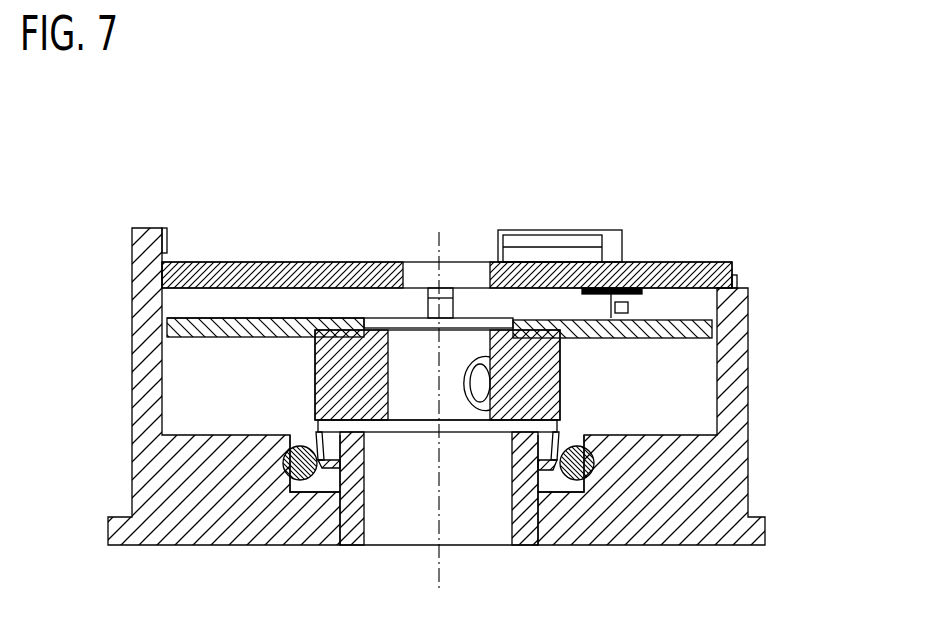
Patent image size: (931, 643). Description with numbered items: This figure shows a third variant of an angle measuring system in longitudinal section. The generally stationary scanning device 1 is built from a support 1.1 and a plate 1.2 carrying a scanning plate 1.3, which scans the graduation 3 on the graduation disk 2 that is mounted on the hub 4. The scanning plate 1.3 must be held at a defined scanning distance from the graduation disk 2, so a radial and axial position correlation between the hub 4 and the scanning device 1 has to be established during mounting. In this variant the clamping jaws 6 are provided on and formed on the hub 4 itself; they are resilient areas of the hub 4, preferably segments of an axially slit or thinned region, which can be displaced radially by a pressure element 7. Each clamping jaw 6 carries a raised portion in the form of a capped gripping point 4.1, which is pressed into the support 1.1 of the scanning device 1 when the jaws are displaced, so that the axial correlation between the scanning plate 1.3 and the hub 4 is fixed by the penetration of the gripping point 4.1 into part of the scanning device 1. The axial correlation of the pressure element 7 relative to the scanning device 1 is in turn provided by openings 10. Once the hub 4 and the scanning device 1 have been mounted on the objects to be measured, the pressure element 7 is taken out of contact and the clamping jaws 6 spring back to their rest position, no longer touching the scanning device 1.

The scanning device 1 is at (753, 272).
The support 1.1 is at (738, 407).
The plate 1.2 is at (663, 262).
The scanning plate 1.3 is at (633, 262).
The graduation disk 2 is at (713, 323).
The graduation 3 is at (275, 316).
The hub 4 is at (545, 363).
The capped gripping point 4.1 is at (345, 472).
The clamping jaws 6 is at (317, 425).
The pressure element 7 is at (308, 478).
The openings 10 is at (280, 480).